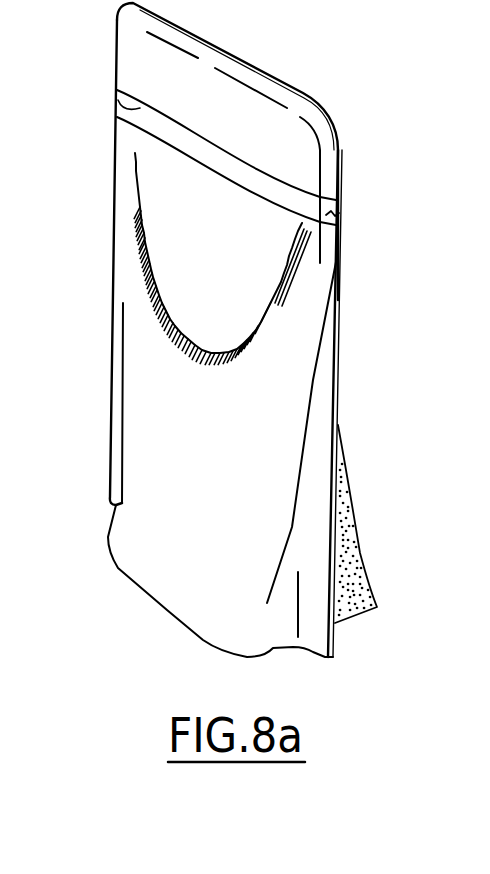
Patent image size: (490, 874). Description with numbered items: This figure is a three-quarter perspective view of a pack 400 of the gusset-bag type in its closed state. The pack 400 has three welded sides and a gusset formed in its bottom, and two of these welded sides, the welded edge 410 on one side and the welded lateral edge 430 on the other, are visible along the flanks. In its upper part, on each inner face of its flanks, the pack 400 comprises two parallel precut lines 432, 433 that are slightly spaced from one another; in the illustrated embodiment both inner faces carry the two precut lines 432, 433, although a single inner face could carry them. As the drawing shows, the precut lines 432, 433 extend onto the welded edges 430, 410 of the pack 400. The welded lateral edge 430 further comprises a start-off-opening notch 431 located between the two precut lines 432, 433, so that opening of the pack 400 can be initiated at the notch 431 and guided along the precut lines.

The pack 400 is at (288, 385).
The welded side 410 is at (117, 352).
The welded lateral edge 430 is at (328, 168).
The start-off-opening notch 431 is at (343, 218).
The precut line 432 is at (127, 143).
The precut line 433 is at (117, 93).